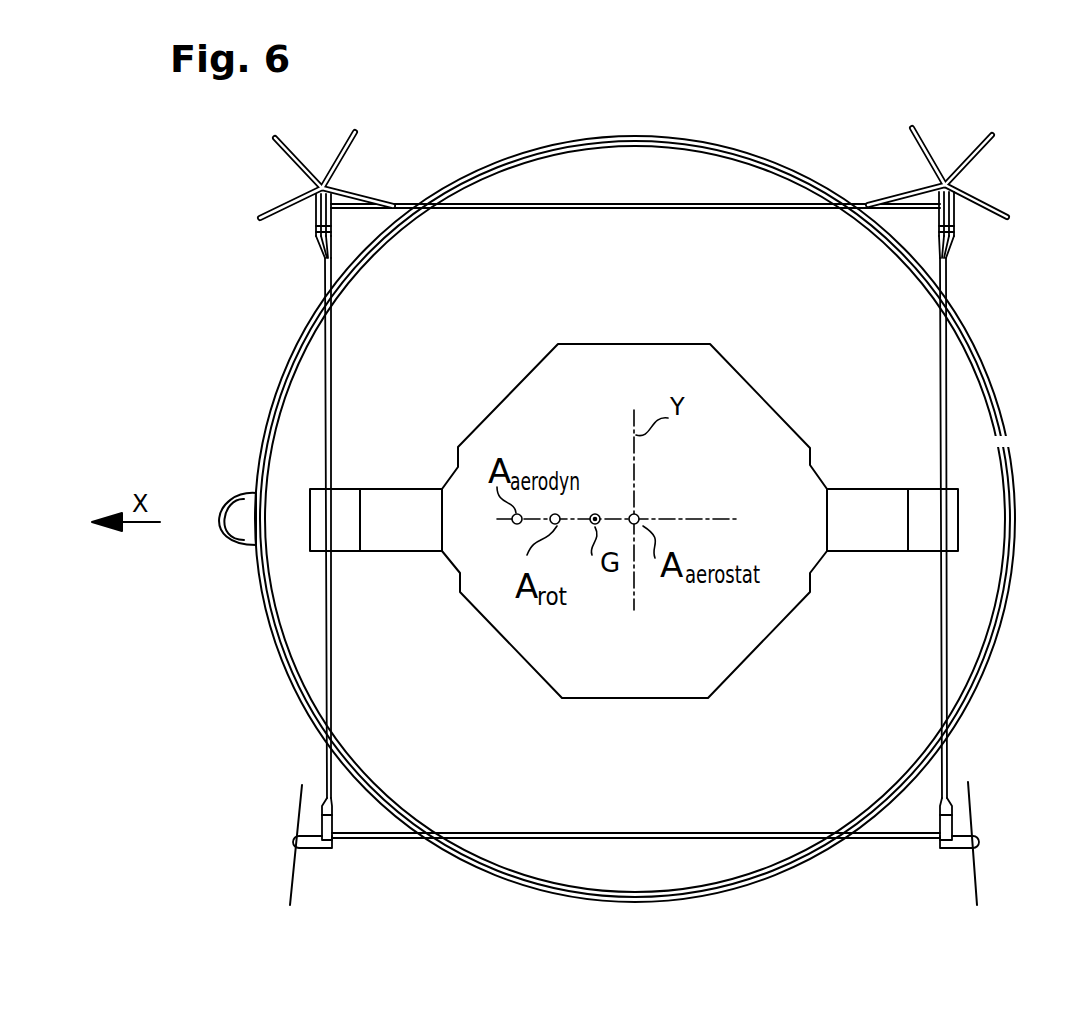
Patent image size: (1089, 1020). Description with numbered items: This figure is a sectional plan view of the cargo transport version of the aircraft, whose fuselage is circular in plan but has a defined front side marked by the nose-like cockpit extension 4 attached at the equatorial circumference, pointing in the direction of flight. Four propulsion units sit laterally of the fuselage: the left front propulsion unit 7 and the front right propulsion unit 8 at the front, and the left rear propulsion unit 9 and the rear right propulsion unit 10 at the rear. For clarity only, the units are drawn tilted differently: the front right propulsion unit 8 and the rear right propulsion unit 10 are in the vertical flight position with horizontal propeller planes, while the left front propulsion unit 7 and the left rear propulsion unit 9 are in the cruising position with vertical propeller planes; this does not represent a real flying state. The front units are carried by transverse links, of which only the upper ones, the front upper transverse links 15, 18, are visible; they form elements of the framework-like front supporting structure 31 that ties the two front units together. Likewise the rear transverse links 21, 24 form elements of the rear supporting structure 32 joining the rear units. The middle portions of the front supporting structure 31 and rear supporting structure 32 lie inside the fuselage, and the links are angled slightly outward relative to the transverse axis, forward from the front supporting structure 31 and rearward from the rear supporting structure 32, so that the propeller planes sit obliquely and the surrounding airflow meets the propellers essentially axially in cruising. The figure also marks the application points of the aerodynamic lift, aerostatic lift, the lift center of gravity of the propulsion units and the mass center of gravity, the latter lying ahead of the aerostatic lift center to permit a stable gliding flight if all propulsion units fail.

The cockpit extension 4 is at (217, 533).
The left front propulsion unit 7 is at (270, 839).
The front right propulsion unit 8 is at (262, 188).
The left rear propulsion unit 9 is at (994, 833).
The rear right propulsion unit 10 is at (1012, 175).
The front upper transverse link 15 is at (327, 762).
The front upper transverse link 18 is at (327, 283).
The rear transverse link 21 is at (943, 765).
The rear transverse link 24 is at (945, 268).
The front supporting structure 31 is at (335, 411).
The rear supporting structure 32 is at (937, 410).